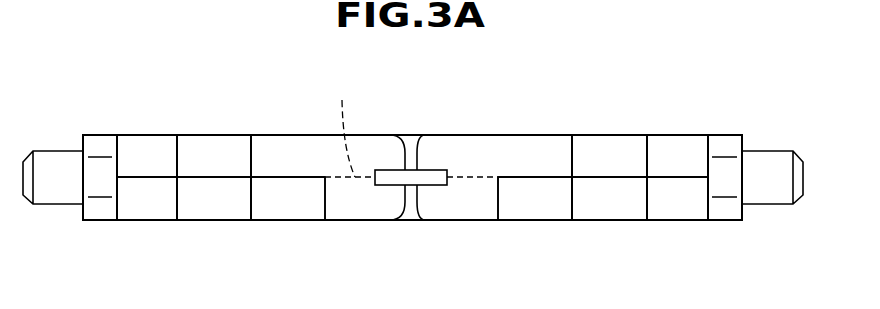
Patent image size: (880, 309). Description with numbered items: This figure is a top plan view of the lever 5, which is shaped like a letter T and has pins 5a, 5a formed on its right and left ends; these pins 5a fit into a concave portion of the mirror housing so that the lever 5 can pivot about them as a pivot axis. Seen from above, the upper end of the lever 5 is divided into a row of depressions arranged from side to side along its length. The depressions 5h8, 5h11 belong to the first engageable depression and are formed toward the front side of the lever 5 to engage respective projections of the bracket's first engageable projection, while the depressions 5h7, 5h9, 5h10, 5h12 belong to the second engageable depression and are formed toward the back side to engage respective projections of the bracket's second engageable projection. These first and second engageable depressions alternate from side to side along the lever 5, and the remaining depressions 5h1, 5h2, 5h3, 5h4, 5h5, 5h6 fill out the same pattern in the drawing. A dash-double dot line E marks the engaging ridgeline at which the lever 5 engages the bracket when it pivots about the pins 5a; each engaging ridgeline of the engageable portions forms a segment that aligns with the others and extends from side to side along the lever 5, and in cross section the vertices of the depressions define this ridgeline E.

The lever 5 is at (450, 148).
The pin 5a is at (60, 167).
The engaging ridgeline E is at (345, 125).
The first hole 5h1 is at (149, 217).
The second hole 5h2 is at (215, 140).
The third hole 5h3 is at (289, 217).
The fourth hole 5h4 is at (535, 217).
The fifth hole 5h5 is at (607, 140).
The sixth hole 5h6 is at (675, 217).
The depression 5h7 is at (148, 140).
The depression 5h8 is at (215, 217).
The depression 5h9 is at (288, 140).
The depression 5h10 is at (533, 140).
The depression 5h11 is at (607, 217).
The depression 5h12 is at (676, 140).